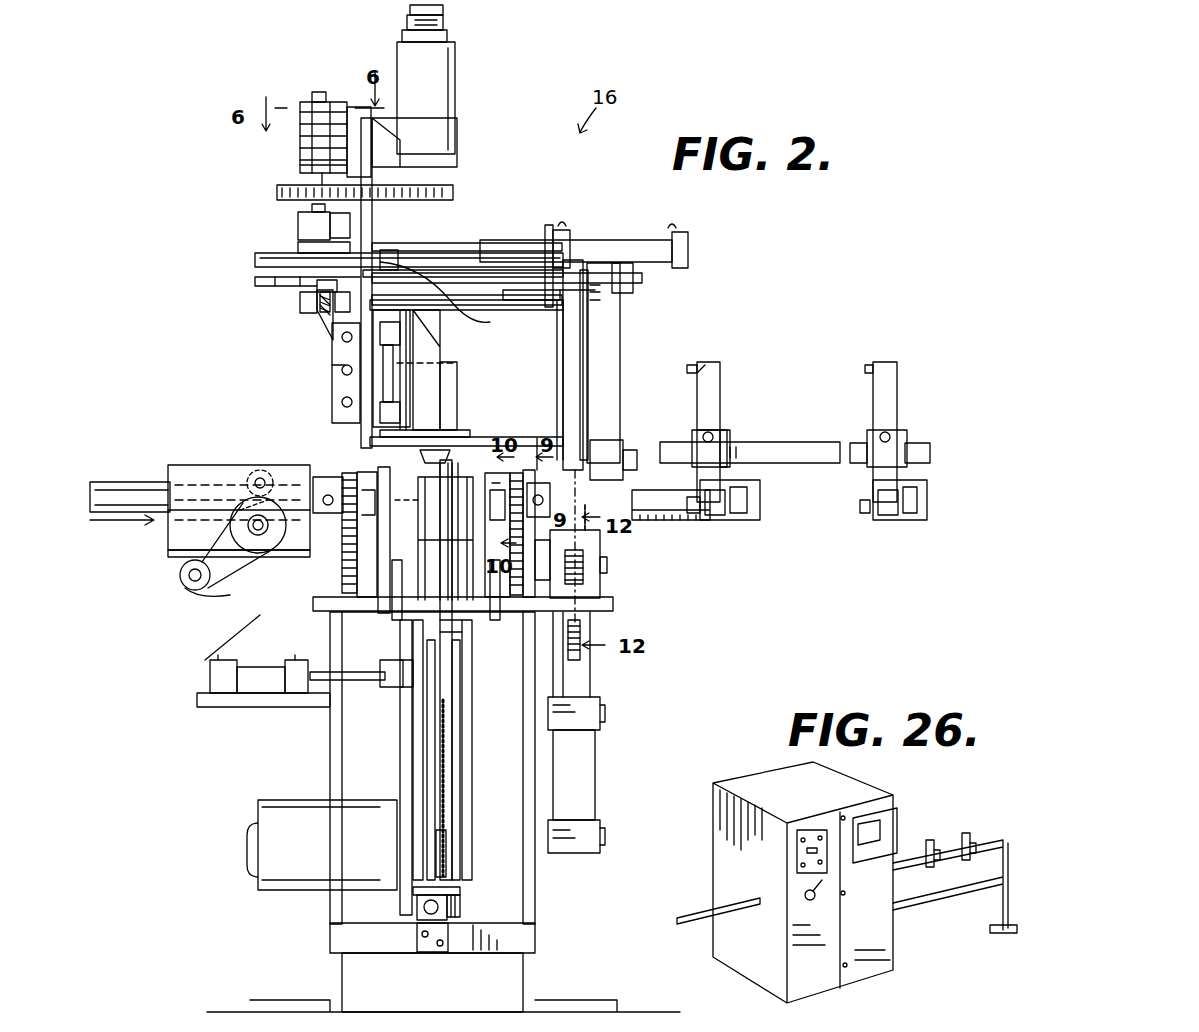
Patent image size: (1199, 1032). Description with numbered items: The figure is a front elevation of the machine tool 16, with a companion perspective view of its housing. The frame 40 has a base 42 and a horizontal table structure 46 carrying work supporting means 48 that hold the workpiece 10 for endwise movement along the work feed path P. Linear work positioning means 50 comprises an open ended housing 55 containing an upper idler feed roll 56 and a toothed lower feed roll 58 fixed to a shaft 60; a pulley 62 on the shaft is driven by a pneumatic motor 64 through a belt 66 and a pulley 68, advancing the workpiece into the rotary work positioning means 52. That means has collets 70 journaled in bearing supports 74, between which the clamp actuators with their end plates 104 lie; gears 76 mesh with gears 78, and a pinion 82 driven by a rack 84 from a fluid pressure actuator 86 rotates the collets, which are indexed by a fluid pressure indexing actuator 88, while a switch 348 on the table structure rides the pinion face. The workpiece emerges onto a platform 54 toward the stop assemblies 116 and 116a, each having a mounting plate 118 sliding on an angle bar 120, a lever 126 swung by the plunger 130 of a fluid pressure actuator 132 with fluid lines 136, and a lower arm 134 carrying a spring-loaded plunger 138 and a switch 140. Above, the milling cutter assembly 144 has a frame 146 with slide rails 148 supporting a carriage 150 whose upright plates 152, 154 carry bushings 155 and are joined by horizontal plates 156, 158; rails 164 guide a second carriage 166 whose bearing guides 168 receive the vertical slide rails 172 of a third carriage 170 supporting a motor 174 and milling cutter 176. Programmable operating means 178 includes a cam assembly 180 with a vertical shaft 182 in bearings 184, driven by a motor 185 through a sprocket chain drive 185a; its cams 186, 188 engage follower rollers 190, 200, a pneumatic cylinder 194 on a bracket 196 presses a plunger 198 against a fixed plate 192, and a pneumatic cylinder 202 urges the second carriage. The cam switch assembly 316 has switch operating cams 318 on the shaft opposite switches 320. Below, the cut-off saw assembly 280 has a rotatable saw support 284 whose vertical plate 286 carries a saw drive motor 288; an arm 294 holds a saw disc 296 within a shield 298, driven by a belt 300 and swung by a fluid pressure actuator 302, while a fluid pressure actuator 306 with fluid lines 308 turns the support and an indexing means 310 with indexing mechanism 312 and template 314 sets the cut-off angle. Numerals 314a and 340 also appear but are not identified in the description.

In FIG. 2, the workpiece 10 is at (134, 464).
In FIG. 26, the workpiece 10 is at (701, 900).
In FIG. 26, the machine tool 16 is at (760, 753).
In FIG. 2, the frame 40 is at (538, 890).
In FIG. 2, the base 42 is at (572, 1003).
In FIG. 2, the horizontal table structure 46 is at (330, 605).
In FIG. 2, the work supporting means 48 is at (210, 640).
In FIG. 2, the linear work positioning means 50 is at (201, 458).
In FIG. 2, the rotary work positioning means 52 is at (495, 590).
In FIG. 2, the platform 54 is at (662, 522).
In FIG. 2, the open ended housing 55 is at (172, 470).
In FIG. 2, the upper feed roll 56 is at (250, 475).
In FIG. 2, the lower feed roll 58 is at (235, 528).
In FIG. 2, the shaft 60 is at (265, 550).
In FIG. 2, the pulley 62 is at (282, 560).
In FIG. 2, the pneumatic motor 64 is at (180, 578).
In FIG. 2, the belt 66 is at (235, 595).
In FIG. 2, the pulley 68 is at (190, 590).
In FIG. 2, the collets 70 is at (345, 470).
In FIG. 2, the bearing supports 74 is at (290, 605).
In FIG. 2, the work holder gear 76 is at (320, 480).
In FIG. 2, the coaxial gears 78 is at (320, 705).
In FIG. 2, the pinion 82 is at (590, 545).
In FIG. 2, the rack 84 is at (575, 682).
In FIG. 2, the fluid pressure actuator 86 is at (590, 785).
In FIG. 2, the fluid pressure indexing actuator 88 is at (318, 478).
In FIG. 2, the end plates 104 is at (540, 450).
In FIG. 2, the workpiece stop and ejector assembly 116 is at (762, 369).
In FIG. 2, the second stop assembly 116a is at (938, 376).
In FIG. 26, the second stop assembly 116a is at (937, 830).
In FIG. 2, the mounting plate 118 is at (732, 435).
In FIG. 2, the angle bar 120 is at (795, 442).
In FIG. 26, the angle bar 120 is at (988, 842).
In FIG. 2, the bell-crank lever-like member 126 is at (730, 487).
In FIG. 2, the plunger 130 is at (695, 445).
In FIG. 2, the fluid pressure actuator 132 is at (700, 393).
In FIG. 2, the lower lever arm 134 is at (718, 515).
In FIG. 2, the fluid lines 136 is at (698, 368).
In FIG. 2, the spring-loaded plunger 138 is at (690, 500).
In FIG. 2, the switch 140 is at (748, 505).
In FIG. 2, the milling cutter assembly 144 is at (512, 240).
In FIG. 2, the cutter assembly frame 146 is at (513, 218).
In FIG. 2, the horizontal slide rails 148 is at (560, 232).
In FIG. 2, the carriage 150 is at (597, 345).
In FIG. 2, the upright plate 152 is at (586, 322).
In FIG. 2, the carriage plate 154 is at (366, 220).
In FIG. 2, the bushings 155 is at (610, 265).
In FIG. 2, the horizontal plate 156 is at (540, 318).
In FIG. 2, the horizontal plate 158 is at (462, 432).
In FIG. 2, the horizontal slide rails 164 is at (340, 337).
In FIG. 2, the second carriage 166 is at (426, 356).
In FIG. 2, the bearing guides 168 is at (397, 342).
In FIG. 2, the third carriage 170 is at (480, 366).
In FIG. 2, the vertical slide rails 172 is at (392, 382).
In FIG. 2, the motor 174 is at (455, 372).
In FIG. 2, the milling cutter 176 is at (408, 475).
In FIG. 2, the programmable operating means 178 is at (277, 156).
In FIG. 2, the cam assembly 180 is at (244, 274).
In FIG. 2, the vertical shaft 182 is at (297, 218).
In FIG. 2, the bearings 184 is at (297, 231).
In FIG. 2, the motor 185 is at (453, 78).
In FIG. 2, the sprocket chain drive 185a is at (460, 185).
In FIG. 2, the cam 186 is at (255, 258).
In FIG. 2, the cam 188 is at (255, 281).
In FIG. 2, the follower roller 190 is at (453, 300).
In FIG. 2, the fixed plate 192 is at (466, 222).
In FIG. 2, the pressurized pneumatic cylinder 194 is at (690, 250).
In FIG. 2, the bracket 196 is at (585, 258).
In FIG. 2, the plunger 198 is at (552, 240).
In FIG. 2, the follower roller 200 is at (300, 288).
In FIG. 2, the pressurized pneumatic cylinder 202 is at (345, 365).
In FIG. 2, the cut-off saw assembly 280 is at (357, 760).
In FIG. 2, the rotatable saw support 284 is at (400, 755).
In FIG. 2, the vertical plate 286 is at (405, 732).
In FIG. 2, the saw drive motor 288 is at (322, 845).
In FIG. 2, the arm 294 is at (495, 788).
In FIG. 2, the saw disc 296 is at (378, 691).
In FIG. 2, the shield 298 is at (439, 522).
In FIG. 2, the belt 300 is at (448, 812).
In FIG. 2, the fluid pressure actuator 302 is at (455, 720).
In FIG. 2, the fluid pressure actuator 306 is at (250, 680).
In FIG. 2, the fluid lines 308 is at (175, 690).
In FIG. 2, the indexing means 310 is at (468, 890).
In FIG. 2, the indexing mechanism 312 is at (420, 925).
In FIG. 2, the template 314 is at (455, 895).
In FIG. 2, the plate 314a is at (415, 890).
In FIG. 2, the cam switch assembly 316 is at (350, 78).
In FIG. 2, the switch operating cams 318 is at (300, 105).
In FIG. 2, the switches 320 is at (298, 164).
In FIG. 2, the cap 340 is at (445, 13).
In FIG. 2, the switch 348 is at (590, 580).
In FIG. 2, the work feed path P is at (122, 537).